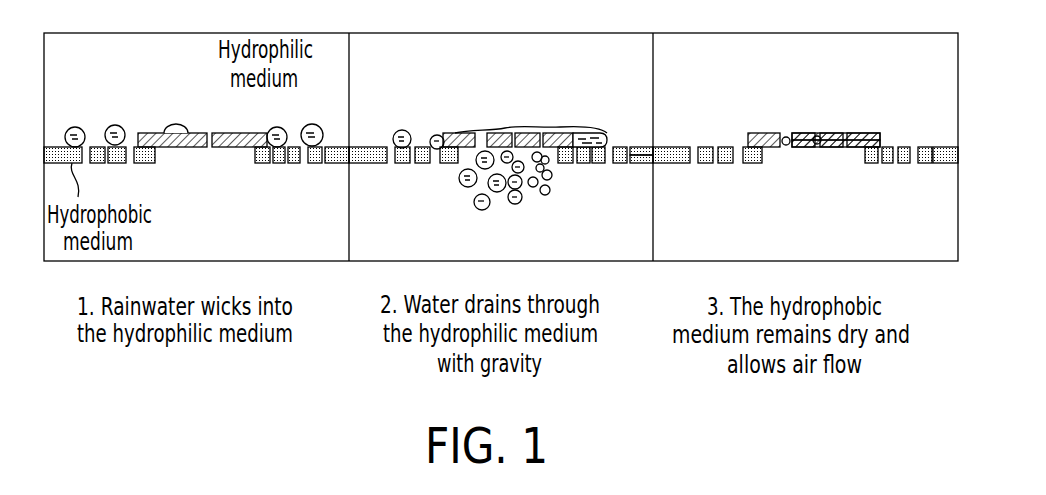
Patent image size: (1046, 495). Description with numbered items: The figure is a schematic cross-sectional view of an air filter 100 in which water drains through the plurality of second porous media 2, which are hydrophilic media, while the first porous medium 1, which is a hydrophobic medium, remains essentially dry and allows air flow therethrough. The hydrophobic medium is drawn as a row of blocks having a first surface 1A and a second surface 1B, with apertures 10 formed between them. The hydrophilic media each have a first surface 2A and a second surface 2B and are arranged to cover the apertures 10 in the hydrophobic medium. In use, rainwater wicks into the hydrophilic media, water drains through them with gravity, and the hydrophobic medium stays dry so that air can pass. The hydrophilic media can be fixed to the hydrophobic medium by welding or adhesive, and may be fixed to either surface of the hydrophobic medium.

The air filter 100 is at (105, 70).
The first porous medium 1 is at (364, 147).
The first surface 1A is at (633, 147).
The second surface 1B is at (628, 163).
The second porous media 2 is at (222, 68).
The first surface 2A is at (803, 133).
The second surface 2B is at (837, 147).
The apertures 10 is at (194, 178).